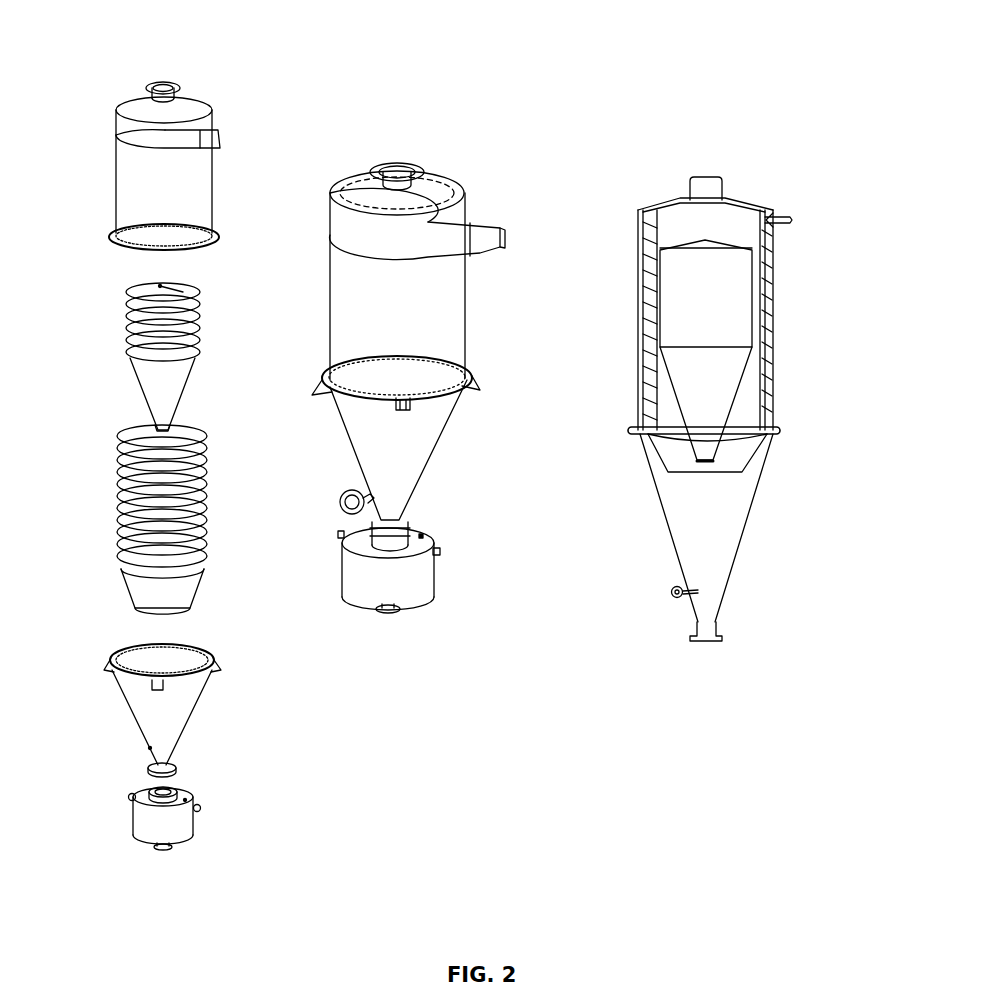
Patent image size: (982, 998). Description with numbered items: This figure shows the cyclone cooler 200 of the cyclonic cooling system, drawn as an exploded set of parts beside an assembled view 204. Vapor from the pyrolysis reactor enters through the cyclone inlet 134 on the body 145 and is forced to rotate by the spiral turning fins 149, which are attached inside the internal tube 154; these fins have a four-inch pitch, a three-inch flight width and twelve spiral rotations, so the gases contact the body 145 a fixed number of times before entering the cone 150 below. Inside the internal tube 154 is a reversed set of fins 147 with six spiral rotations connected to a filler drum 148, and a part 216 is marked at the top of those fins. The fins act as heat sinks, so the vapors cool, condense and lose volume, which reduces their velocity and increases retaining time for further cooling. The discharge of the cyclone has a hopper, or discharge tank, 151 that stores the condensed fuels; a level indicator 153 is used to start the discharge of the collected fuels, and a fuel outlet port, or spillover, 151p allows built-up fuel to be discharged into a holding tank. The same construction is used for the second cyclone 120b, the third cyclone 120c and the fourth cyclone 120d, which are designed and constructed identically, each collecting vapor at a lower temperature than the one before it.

The powder feed system 200 is at (754, 56).
The assembled hopper unit 204 is at (771, 605).
The cyclone inlet 134 is at (222, 134).
The body 145 is at (126, 188).
The gasket ring 216 is at (185, 292).
The reversed set of fins 147 is at (128, 310).
The filler drum 148 is at (152, 382).
The turning fins 149 is at (122, 462).
The internal tube 154 is at (183, 577).
The cone 150 is at (176, 712).
The hopper 151 is at (188, 820).
The fuel outlet port 151p is at (130, 796).
The level indicator 153 is at (345, 490).
The second cyclone 120b is at (425, 300).
The third cyclone 120c is at (428, 320).
The fourth cyclone 120d is at (428, 337).